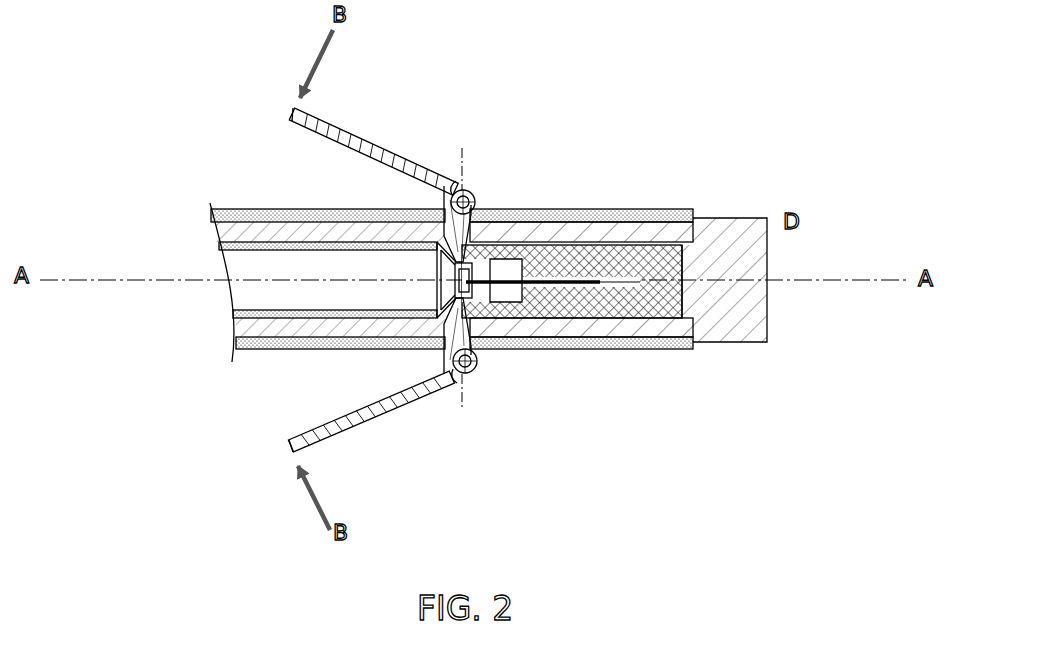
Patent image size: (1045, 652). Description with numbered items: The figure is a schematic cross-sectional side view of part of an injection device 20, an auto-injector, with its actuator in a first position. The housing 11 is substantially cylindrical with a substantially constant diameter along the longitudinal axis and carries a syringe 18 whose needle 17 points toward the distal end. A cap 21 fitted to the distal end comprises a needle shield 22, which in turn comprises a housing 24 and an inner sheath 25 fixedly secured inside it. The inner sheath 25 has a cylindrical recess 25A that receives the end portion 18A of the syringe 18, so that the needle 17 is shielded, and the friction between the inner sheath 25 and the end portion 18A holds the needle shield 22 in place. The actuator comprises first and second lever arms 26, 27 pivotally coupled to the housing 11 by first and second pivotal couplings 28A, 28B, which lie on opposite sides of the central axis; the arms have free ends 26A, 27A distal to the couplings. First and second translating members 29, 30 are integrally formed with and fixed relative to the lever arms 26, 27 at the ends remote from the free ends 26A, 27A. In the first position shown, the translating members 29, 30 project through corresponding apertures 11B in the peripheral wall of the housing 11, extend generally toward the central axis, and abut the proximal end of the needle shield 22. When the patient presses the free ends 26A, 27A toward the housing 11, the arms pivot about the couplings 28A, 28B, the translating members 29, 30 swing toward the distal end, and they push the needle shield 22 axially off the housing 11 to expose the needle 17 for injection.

The injection device 20 is at (98, 124).
The cap 21 is at (759, 137).
The housing 11 is at (312, 213).
The apertures 11B is at (480, 218).
The syringe 18 is at (284, 313).
The end portion of the syringe 18A is at (468, 292).
The first translating member 29 is at (445, 233).
The second translating member 30 is at (455, 333).
The first lever arm 26 is at (363, 143).
The free end of the first lever arm 26A is at (291, 114).
The second lever arm 27 is at (378, 405).
The free end of the second lever arm 27A is at (290, 444).
The first pivotal coupling 28A is at (469, 192).
The second pivotal coupling 28B is at (459, 358).
The housing of the needle shield 24 is at (667, 235).
The inner sheath 25 is at (610, 250).
The cylindrical recess 25A is at (507, 291).
The needle 17 is at (565, 278).
The needle shield 22 is at (750, 330).